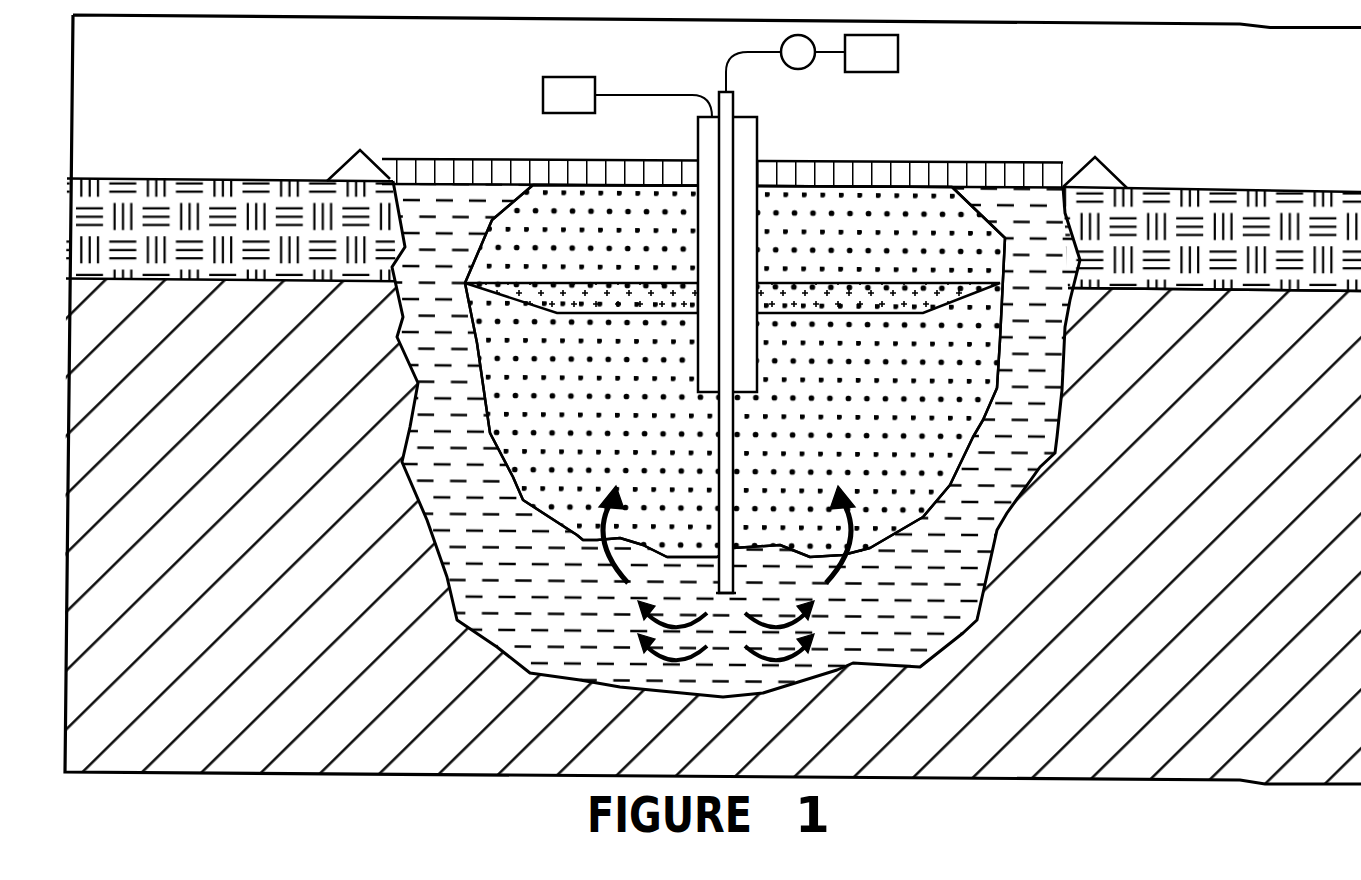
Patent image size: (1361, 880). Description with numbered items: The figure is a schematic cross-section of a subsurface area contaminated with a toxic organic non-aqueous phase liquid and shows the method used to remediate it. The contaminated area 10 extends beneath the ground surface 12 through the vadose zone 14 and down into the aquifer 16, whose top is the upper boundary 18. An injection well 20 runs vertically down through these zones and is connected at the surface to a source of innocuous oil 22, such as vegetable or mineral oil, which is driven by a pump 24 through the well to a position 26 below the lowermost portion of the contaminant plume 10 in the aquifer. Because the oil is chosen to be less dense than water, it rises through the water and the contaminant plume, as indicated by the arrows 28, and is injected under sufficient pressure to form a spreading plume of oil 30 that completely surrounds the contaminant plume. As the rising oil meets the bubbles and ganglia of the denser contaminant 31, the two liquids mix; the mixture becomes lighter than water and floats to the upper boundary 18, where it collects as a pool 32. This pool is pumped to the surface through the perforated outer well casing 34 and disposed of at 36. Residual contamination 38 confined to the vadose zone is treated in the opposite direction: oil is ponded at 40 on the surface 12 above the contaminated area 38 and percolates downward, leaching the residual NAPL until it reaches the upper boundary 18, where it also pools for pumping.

The contaminated area 10 is at (537, 374).
The ground surface 12 is at (245, 180).
The vadose zone 14 is at (1180, 233).
The aquifer 16 is at (243, 641).
The upper boundary of the aquifer 18 is at (1318, 292).
The injection well 20 is at (713, 90).
The source of innocuous oil 22 is at (890, 68).
The pump 24 is at (808, 68).
The position below the contaminant plume 26 is at (735, 573).
The arrows 28 is at (592, 523).
The spreading plume of oil 30 is at (1012, 513).
The denser contaminant 31 is at (611, 435).
The pool 32 is at (876, 322).
The perforated outer well casing 34 is at (697, 153).
The disposal 36 is at (540, 97).
The residual contamination 38 is at (614, 248).
The ponded oil 40 is at (945, 163).